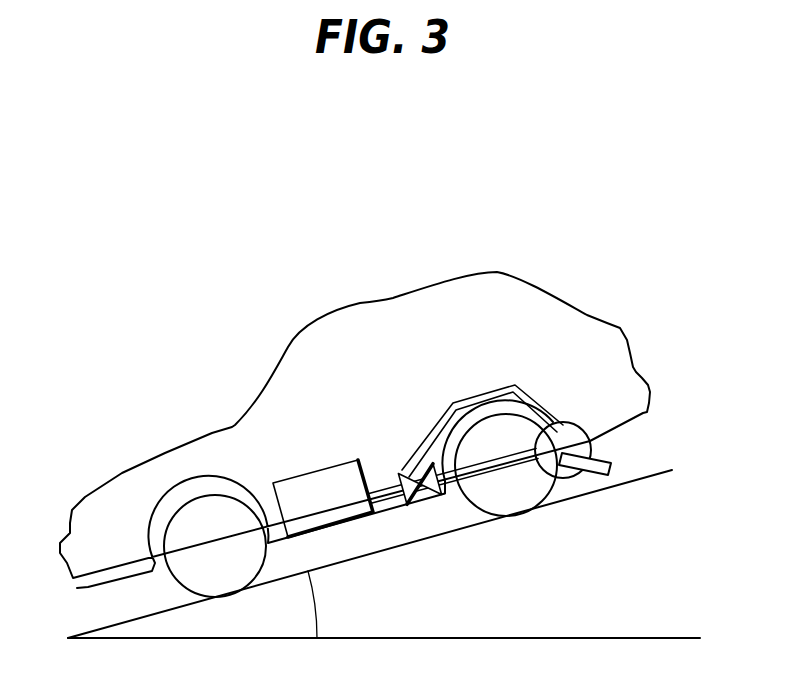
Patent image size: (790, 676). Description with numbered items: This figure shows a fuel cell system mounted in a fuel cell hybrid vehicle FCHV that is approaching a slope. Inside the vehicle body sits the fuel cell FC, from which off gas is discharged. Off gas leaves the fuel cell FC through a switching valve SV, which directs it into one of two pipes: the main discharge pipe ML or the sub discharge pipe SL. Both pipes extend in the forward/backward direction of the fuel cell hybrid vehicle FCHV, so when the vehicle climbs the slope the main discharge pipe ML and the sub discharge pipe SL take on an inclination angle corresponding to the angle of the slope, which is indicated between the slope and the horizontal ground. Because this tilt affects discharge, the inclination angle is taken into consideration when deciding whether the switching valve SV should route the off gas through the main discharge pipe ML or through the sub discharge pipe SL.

The fuel cell hybrid vehicle FCHV is at (378, 297).
The fuel cell FC is at (323, 498).
The main discharge pipe ML is at (490, 473).
The switching valve SV is at (420, 500).
The sub discharge pipe SL is at (493, 390).